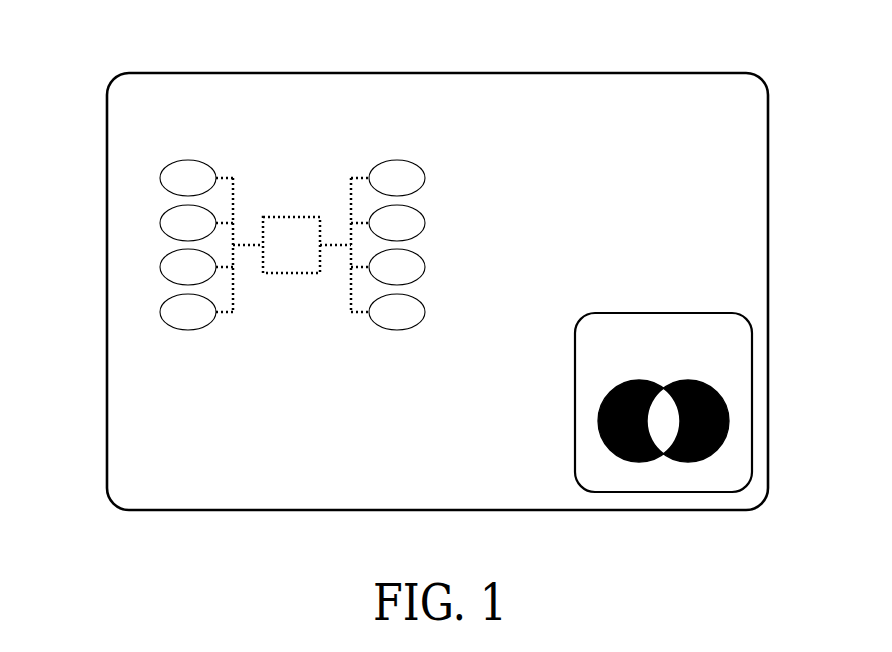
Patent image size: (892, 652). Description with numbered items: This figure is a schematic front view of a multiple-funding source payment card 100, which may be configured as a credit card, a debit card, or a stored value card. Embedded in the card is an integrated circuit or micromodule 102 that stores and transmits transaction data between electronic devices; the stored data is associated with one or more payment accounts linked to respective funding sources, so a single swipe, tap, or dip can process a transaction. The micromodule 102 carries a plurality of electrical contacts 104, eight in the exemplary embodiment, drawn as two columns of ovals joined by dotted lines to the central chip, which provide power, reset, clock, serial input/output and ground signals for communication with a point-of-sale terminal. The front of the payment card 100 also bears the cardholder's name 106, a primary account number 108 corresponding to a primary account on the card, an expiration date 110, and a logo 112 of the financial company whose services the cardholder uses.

The payment card 100 is at (705, 73).
The micromodule 102 is at (297, 217).
The electrical contacts 104 is at (160, 230).
The cardholder's name 106 is at (200, 478).
The primary account number 108 is at (176, 350).
The expiration date 110 is at (420, 406).
The logo 112 is at (713, 483).